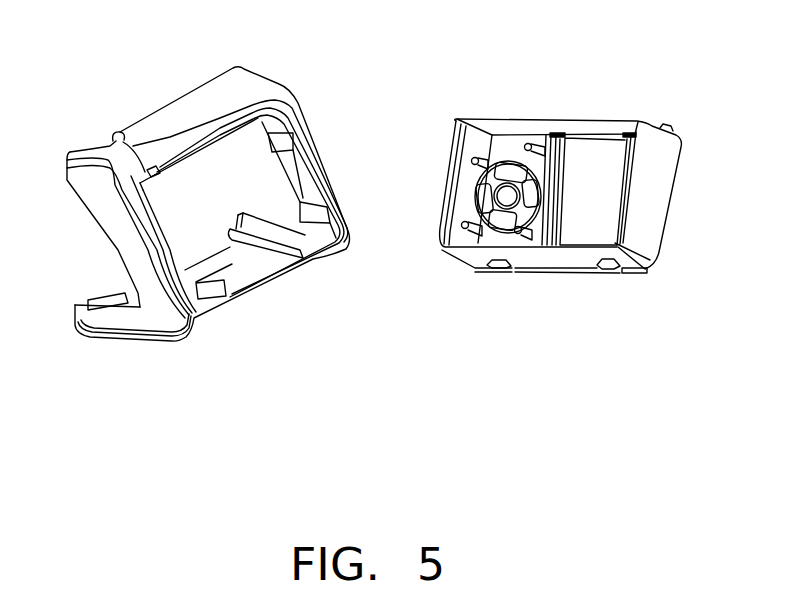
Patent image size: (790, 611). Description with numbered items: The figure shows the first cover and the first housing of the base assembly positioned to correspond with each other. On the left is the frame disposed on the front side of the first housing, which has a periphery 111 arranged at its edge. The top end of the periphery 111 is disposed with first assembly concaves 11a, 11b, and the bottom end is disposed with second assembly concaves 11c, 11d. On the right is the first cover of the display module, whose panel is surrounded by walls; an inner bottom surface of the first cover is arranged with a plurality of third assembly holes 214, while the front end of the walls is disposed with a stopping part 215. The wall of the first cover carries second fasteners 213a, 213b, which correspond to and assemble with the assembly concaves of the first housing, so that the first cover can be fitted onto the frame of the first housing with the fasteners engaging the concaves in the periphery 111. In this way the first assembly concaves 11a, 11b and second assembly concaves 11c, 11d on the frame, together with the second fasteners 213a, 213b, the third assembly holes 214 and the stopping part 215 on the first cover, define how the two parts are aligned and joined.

The periphery 111 is at (113, 133).
The first assembly concave 11a is at (160, 169).
The first assembly concave 11b is at (262, 116).
The second assembly concave 11c is at (236, 298).
The second assembly concave 11d is at (316, 256).
The second fastener 213a is at (607, 272).
The second fastener 213b is at (497, 272).
The third assembly hole 214 is at (516, 222).
The stopping part 215 is at (667, 125).